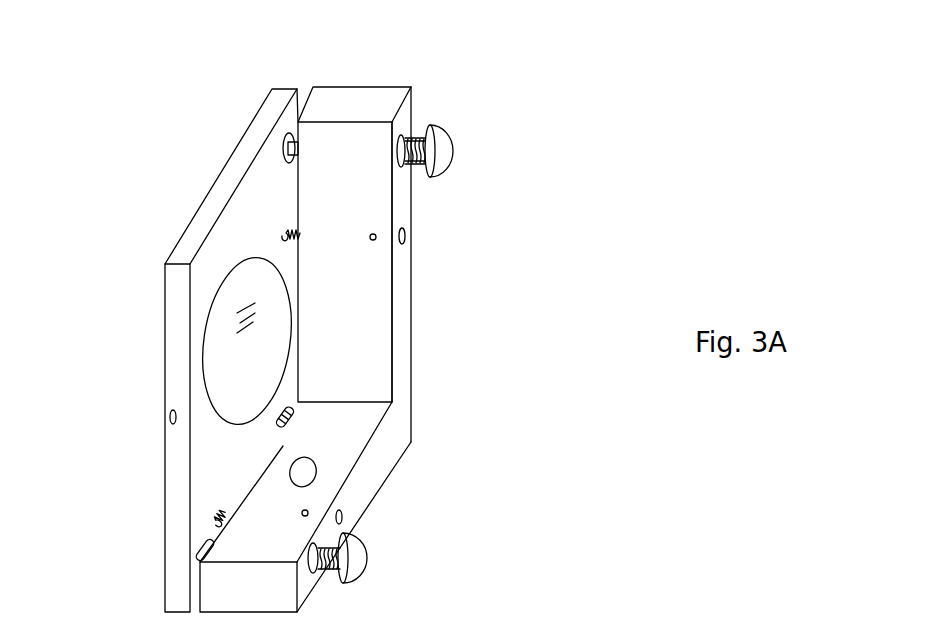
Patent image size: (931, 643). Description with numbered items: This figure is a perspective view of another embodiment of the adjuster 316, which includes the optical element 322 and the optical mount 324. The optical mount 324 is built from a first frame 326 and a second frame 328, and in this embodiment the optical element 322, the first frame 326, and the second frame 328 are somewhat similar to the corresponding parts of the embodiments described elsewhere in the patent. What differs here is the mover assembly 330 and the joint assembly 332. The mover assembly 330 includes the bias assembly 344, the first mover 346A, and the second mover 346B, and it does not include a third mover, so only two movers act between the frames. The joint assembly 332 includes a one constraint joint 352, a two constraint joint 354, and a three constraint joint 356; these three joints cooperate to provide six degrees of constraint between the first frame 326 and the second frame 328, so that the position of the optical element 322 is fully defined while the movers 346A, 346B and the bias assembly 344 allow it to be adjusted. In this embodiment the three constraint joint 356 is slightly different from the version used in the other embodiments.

The adjuster 316 is at (415, 72).
The optical element 322 is at (220, 352).
The optical mount 324 is at (386, 96).
The first frame 326 is at (366, 98).
The second frame 328 is at (213, 200).
The mover assembly 330 is at (512, 178).
The joint assembly 332 is at (202, 532).
The bias assembly 344 is at (306, 226).
The first mover 346A is at (450, 134).
The second mover 346B is at (368, 573).
The one constraint joint 352 is at (296, 150).
The two constraint joint 354 is at (202, 550).
The three constraint joint 356 is at (298, 427).